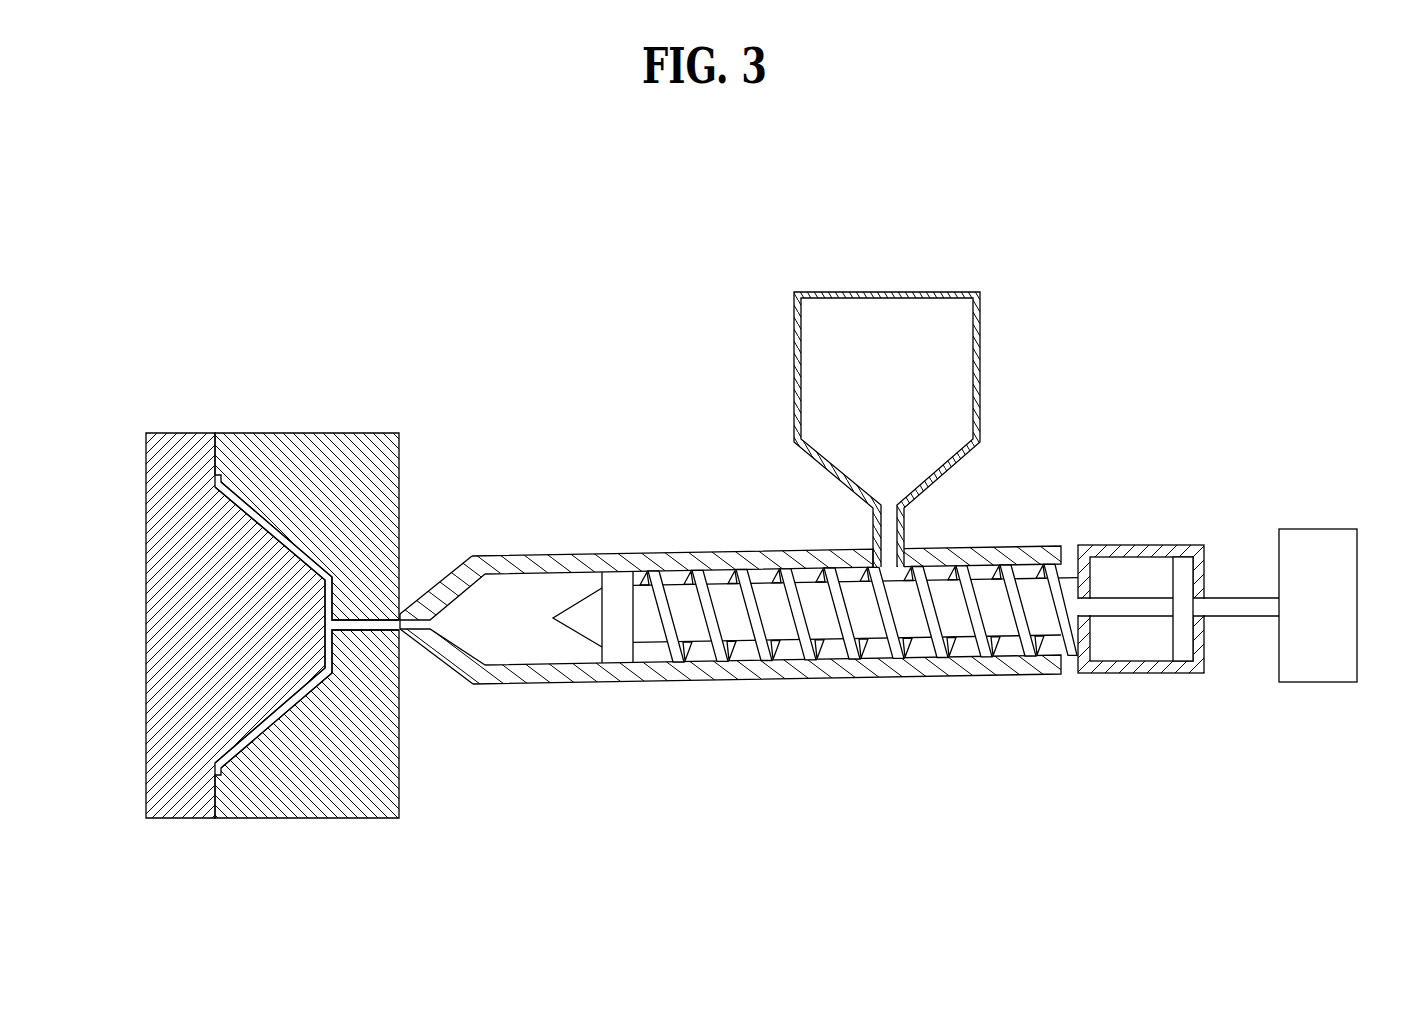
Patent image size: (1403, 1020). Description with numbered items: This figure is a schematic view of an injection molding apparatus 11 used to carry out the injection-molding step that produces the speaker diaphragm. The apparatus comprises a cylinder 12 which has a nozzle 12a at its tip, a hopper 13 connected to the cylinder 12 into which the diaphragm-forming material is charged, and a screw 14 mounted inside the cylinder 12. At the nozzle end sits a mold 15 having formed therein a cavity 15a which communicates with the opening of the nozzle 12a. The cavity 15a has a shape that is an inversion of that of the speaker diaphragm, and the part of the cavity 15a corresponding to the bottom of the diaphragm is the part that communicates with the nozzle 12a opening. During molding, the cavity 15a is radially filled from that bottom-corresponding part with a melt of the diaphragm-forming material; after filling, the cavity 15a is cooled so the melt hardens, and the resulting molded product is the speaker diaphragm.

The injection molding apparatus 11 is at (878, 436).
The cylinder 12 is at (730, 574).
The nozzle 12a is at (432, 620).
The hopper 13 is at (943, 289).
The screw 14 is at (1030, 590).
The mold 15 is at (309, 573).
The cavity 15a is at (340, 657).